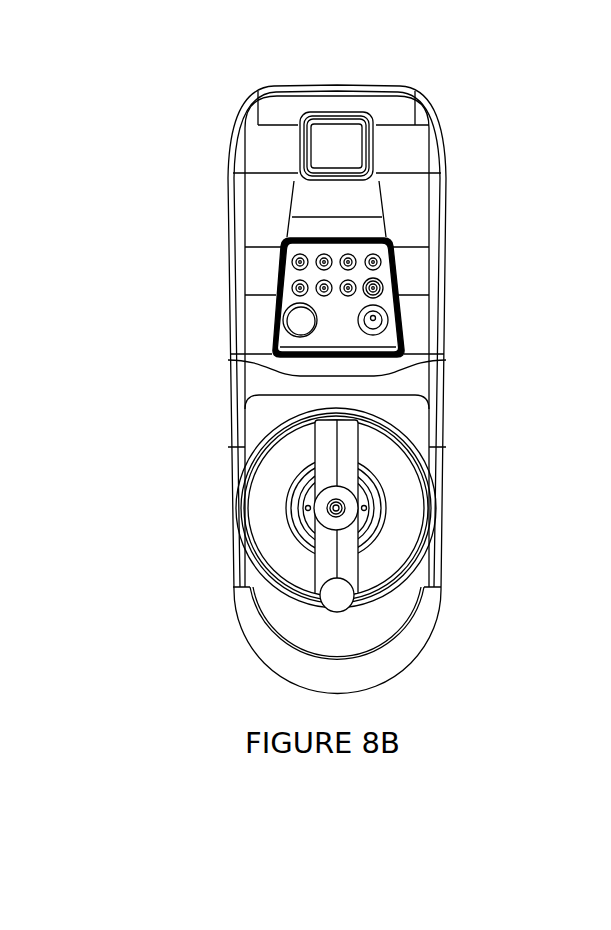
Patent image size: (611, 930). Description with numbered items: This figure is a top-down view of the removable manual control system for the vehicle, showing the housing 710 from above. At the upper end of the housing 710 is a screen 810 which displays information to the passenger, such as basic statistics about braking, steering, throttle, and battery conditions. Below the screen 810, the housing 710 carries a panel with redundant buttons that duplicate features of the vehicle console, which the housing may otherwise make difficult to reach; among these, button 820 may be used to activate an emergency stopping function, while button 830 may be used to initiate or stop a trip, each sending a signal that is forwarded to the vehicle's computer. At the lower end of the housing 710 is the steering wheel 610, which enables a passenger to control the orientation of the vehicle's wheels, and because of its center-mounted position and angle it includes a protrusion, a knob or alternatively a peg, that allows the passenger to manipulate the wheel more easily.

The housing 710 is at (233, 425).
The screen 810 is at (300, 147).
The button 820 is at (283, 322).
The button 830 is at (392, 322).
The steering wheel 610 is at (240, 482).